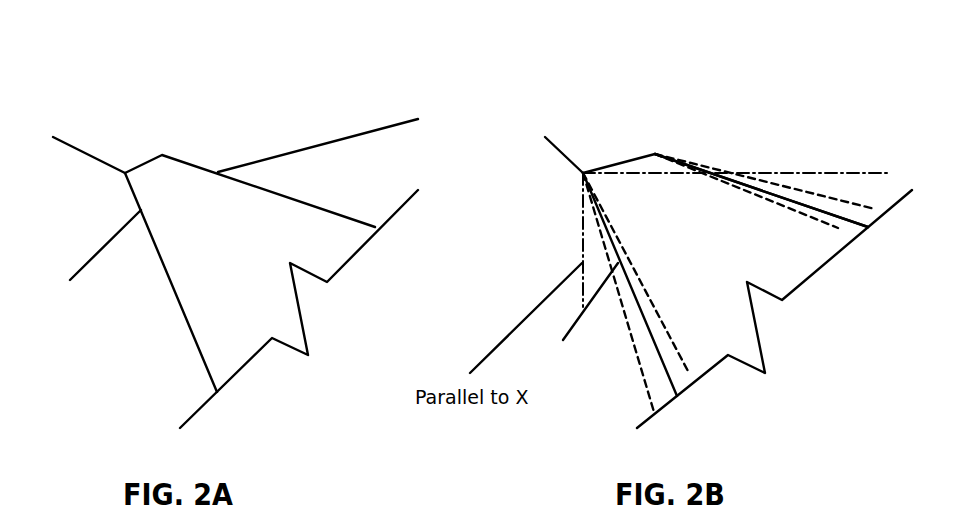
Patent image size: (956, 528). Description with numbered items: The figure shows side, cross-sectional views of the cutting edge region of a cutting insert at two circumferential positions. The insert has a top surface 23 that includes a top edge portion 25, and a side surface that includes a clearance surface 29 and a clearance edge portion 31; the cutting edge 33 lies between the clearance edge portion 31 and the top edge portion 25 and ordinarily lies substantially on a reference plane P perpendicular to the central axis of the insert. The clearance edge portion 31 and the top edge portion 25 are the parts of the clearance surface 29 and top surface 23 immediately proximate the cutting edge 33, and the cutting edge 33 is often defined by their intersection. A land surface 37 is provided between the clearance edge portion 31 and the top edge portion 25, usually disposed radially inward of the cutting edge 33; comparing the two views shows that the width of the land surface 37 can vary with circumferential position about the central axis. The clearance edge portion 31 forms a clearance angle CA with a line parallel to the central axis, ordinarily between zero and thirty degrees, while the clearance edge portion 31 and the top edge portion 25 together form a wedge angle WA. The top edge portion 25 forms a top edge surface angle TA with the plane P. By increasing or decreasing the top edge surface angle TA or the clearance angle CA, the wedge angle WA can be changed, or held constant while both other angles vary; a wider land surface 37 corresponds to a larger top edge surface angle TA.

In FIG. 2B, the top surface 23 is at (858, 200).
In FIG. 2A, the top edge portion 25 is at (337, 143).
In FIG. 2B, the top edge portion 25 is at (818, 202).
In FIG. 2B, the clearance surface 29 is at (635, 322).
In FIG. 2A, the clearance edge portion 31 is at (95, 263).
In FIG. 2B, the clearance edge portion 31 is at (580, 317).
In FIG. 2A, the cutting edge 33 is at (69, 151).
In FIG. 2B, the cutting edge 33 is at (545, 151).
In FIG. 2A, the land surface 37 is at (146, 148).
In FIG. 2B, the land surface 37 is at (619, 148).
In FIG. 2B, the top edge surface angle TA is at (746, 168).
In FIG. 2B, the reference plane P is at (782, 170).
In FIG. 2B, the clearance angle CA is at (577, 247).
In FIG. 2B, the wedge angle WA is at (725, 195).